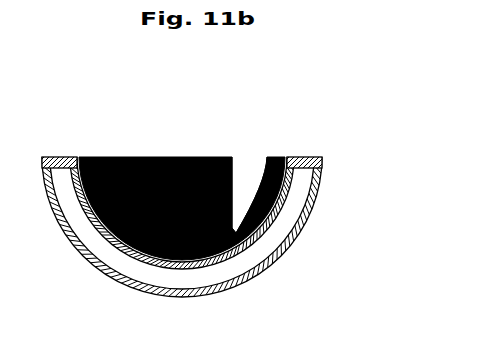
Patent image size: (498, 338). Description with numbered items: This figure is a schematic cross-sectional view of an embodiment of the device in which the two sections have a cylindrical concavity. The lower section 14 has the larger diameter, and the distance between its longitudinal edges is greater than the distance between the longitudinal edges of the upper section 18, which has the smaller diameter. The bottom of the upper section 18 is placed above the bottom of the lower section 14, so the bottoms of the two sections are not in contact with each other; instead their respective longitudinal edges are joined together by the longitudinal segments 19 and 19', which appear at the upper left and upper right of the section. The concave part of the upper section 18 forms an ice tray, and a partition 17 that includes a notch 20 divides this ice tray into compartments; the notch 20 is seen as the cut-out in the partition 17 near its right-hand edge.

The lower section 14 is at (295, 230).
The partition 17 is at (144, 217).
The upper section 18 is at (286, 186).
The longitudinal segment 19 is at (67, 135).
The longitudinal segment 19' is at (315, 135).
The notch 20 is at (247, 177).